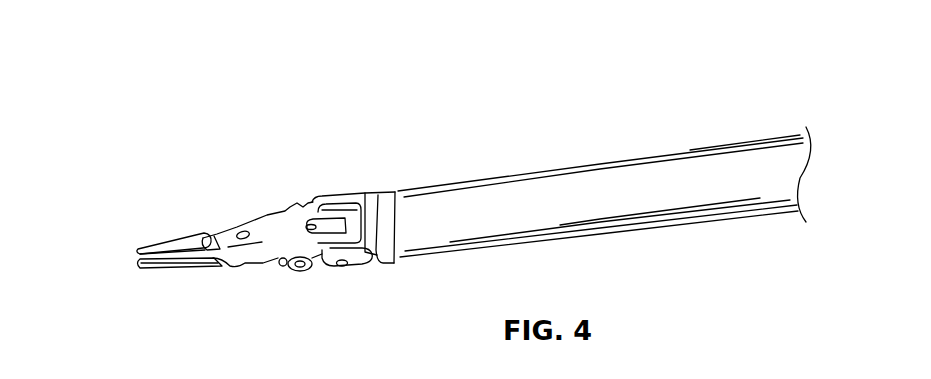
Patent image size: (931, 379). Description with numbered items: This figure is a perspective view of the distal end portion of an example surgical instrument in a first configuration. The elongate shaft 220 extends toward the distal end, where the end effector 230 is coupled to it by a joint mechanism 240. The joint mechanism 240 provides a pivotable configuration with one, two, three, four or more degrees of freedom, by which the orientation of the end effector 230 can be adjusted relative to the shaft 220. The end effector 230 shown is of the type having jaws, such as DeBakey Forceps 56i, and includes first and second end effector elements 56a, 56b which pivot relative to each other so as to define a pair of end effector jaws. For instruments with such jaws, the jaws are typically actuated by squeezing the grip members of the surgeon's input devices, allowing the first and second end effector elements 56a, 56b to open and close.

The shaft 220 is at (651, 167).
The end effector 230 is at (226, 215).
The joint mechanism 240 is at (314, 180).
The first end effector element 56a is at (160, 246).
The second end effector element 56b is at (182, 283).
The DeBakey Forceps 56i is at (140, 254).